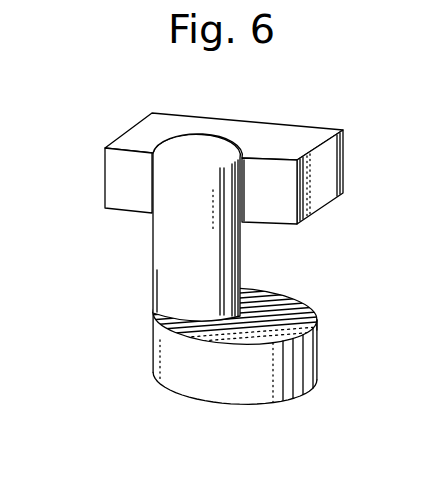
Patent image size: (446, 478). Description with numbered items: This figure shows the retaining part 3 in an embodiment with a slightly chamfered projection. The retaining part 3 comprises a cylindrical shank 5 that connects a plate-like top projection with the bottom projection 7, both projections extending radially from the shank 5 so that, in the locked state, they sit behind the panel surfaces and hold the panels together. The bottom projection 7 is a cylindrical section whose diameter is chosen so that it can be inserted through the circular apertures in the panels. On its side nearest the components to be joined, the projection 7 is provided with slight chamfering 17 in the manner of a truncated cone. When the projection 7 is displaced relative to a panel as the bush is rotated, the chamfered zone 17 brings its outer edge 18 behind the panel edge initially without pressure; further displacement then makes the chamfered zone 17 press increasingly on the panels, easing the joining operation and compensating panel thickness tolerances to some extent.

The retaining part 3 is at (121, 132).
The cylindrical shank 5 is at (185, 262).
The bottom projection 7 is at (197, 362).
The chamfering 17 is at (267, 309).
The outer edge 18 is at (318, 323).